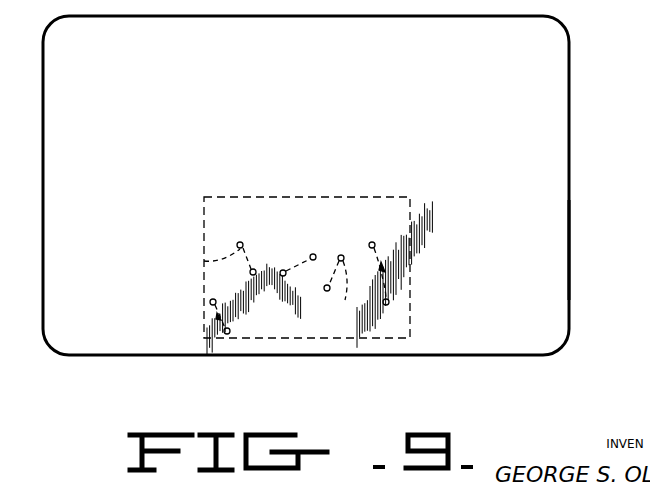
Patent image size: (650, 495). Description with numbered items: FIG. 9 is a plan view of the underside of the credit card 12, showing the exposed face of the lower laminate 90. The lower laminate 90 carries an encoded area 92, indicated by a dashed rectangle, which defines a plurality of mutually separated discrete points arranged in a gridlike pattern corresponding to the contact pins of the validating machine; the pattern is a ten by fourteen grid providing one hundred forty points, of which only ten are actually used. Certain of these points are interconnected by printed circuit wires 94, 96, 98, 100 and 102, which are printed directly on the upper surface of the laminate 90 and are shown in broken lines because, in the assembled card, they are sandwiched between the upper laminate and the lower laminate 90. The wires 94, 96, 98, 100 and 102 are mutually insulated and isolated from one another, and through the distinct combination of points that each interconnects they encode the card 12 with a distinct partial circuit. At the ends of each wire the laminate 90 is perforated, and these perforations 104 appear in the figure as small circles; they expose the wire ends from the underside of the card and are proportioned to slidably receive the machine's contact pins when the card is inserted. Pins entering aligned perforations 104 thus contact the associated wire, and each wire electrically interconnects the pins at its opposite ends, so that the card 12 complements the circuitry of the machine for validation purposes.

The card 12 is at (571, 98).
The lower laminate 90 is at (560, 270).
The encoded area 92 is at (204, 216).
The printed circuit wire 94 is at (383, 268).
The printed circuit wire 96 is at (331, 295).
The printed circuit wire 98 is at (311, 255).
The printed circuit wire 100 is at (204, 261).
The printed circuit wire 102 is at (204, 324).
The perforations 104 is at (241, 242).